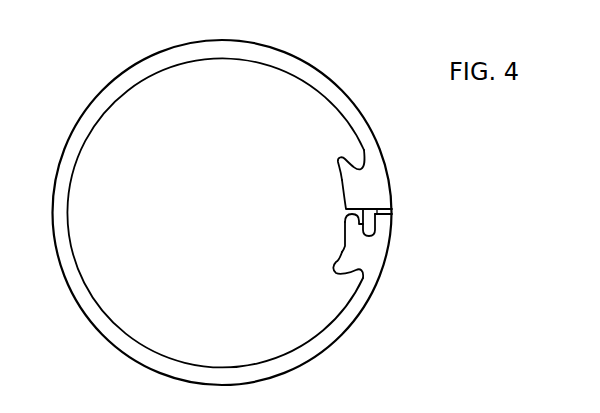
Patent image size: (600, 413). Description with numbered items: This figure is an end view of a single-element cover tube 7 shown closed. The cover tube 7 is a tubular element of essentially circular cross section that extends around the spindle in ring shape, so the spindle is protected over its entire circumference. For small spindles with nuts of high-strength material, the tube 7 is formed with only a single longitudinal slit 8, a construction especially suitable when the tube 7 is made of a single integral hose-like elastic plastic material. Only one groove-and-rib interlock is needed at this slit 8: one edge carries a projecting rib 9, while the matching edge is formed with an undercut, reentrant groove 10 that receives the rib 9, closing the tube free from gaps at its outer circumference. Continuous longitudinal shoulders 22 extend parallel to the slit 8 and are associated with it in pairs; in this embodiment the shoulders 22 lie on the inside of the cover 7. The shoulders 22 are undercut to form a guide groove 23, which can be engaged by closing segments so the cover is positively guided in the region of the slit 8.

The cover tube 7 is at (295, 57).
The longitudinal slit 8 is at (384, 210).
The projecting rib 9 is at (370, 231).
The groove 10 is at (353, 222).
The longitudinal edges or shoulders 22 is at (352, 186).
The guide groove 23 is at (357, 164).